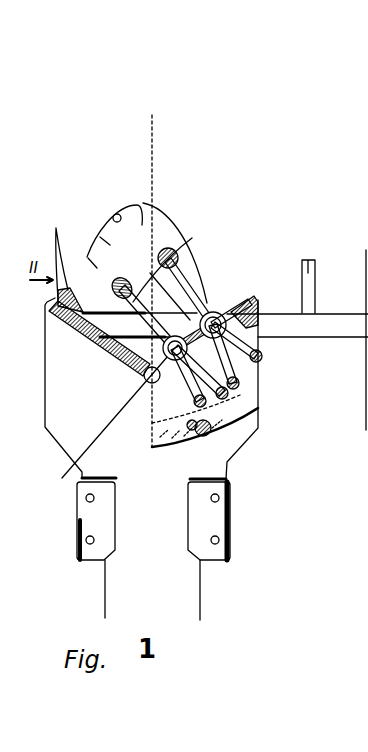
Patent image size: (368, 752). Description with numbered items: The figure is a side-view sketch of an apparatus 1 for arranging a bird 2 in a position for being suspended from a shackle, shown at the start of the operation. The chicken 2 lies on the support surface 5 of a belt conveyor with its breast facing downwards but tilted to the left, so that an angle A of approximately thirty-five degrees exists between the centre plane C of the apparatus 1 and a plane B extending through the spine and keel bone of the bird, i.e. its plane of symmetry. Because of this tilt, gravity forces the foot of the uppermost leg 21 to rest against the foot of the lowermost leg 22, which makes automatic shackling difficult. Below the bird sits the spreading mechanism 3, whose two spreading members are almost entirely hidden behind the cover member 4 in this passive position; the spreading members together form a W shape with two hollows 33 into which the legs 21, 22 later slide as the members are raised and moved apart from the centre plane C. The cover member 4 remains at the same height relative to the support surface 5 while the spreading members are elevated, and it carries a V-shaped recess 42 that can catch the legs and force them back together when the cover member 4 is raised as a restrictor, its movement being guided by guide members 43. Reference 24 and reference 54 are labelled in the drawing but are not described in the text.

The apparatus 1 is at (244, 578).
The bird 2 is at (166, 243).
The spreading mechanism 3 is at (83, 462).
The cover member 4 is at (268, 405).
The support surface 5 is at (290, 328).
The uppermost leg 21 is at (178, 272).
The lowermost leg 22 is at (183, 277).
The lever 24 is at (88, 311).
The hollows 33 is at (360, 455).
The V-shaped recess 42 is at (327, 583).
The guide members 43 is at (234, 525).
The post 54 is at (305, 258).
The angle A is at (218, 432).
The plane B is at (190, 287).
The centre plane C is at (152, 162).